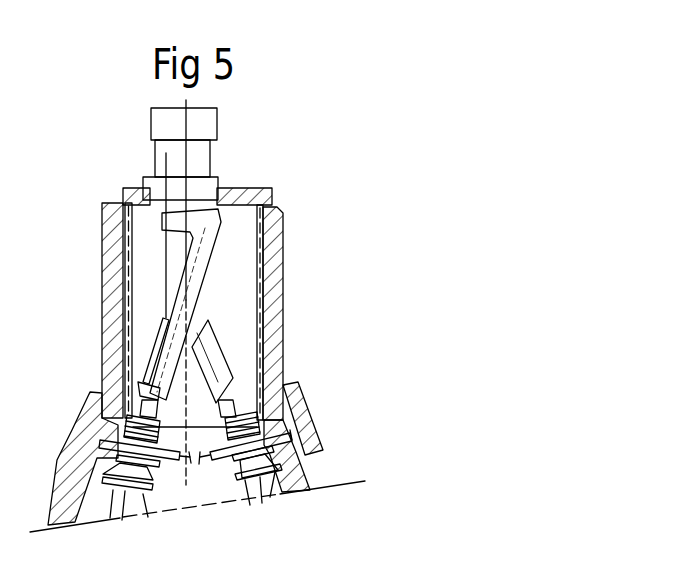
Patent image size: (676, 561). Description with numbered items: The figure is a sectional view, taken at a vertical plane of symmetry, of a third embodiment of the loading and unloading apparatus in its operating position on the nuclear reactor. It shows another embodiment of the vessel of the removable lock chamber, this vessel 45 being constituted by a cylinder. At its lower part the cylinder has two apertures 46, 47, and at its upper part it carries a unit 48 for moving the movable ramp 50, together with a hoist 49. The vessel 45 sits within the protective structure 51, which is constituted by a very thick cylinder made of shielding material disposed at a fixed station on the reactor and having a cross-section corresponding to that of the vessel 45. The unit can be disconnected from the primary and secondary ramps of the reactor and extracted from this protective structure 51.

The vessel 45 is at (258, 297).
The aperture 46 is at (148, 420).
The aperture 47 is at (243, 412).
The unit for moving the movable ramp 48 is at (182, 192).
The hoist 49 is at (212, 152).
The movable ramp 50 is at (205, 260).
The protective structure 51 is at (277, 270).